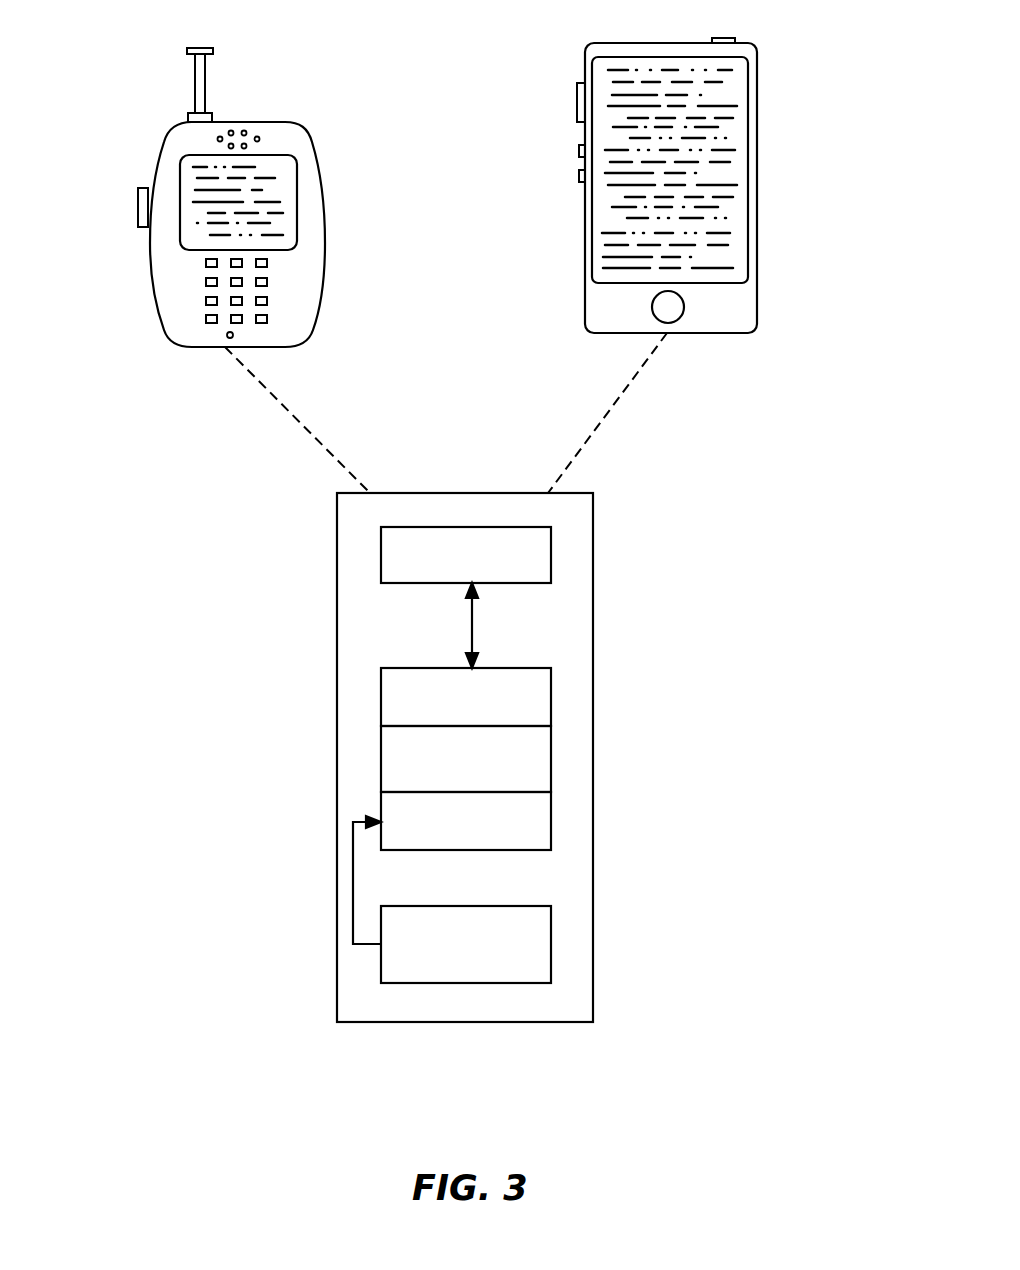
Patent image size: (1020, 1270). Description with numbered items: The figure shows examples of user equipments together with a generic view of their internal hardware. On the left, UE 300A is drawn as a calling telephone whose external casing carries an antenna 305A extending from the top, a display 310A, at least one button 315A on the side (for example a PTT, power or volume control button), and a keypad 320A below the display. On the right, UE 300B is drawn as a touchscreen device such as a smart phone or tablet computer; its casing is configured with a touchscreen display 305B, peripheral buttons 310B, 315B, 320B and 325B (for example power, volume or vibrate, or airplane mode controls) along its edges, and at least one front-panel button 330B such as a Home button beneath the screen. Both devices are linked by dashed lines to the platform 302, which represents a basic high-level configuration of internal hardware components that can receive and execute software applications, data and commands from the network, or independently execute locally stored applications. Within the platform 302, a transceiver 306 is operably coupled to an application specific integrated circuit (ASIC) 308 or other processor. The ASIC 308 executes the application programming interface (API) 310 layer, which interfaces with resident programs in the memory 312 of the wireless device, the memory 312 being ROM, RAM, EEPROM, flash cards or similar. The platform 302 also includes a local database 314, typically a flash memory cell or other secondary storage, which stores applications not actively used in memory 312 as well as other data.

The UE (calling telephone) 300A is at (302, 330).
The antenna 305A is at (205, 72).
The display 310A is at (297, 200).
The button 315A is at (138, 207).
The keypad 320A is at (268, 281).
The UE (touchscreen device) 300B is at (628, 43).
The touchscreen display 305B is at (757, 82).
The peripheral button 310B is at (722, 38).
The peripheral button 315B is at (577, 105).
The peripheral button 320B is at (579, 151).
The peripheral button 325B is at (579, 176).
The front-panel button 330B is at (652, 306).
The platform 302 is at (337, 602).
The transceiver 306 is at (551, 551).
The application specific integrated circuit (ASIC) 308 is at (551, 697).
The application programming interface (API) 310 is at (551, 757).
The memory 312 is at (551, 820).
The local database 314 is at (551, 944).